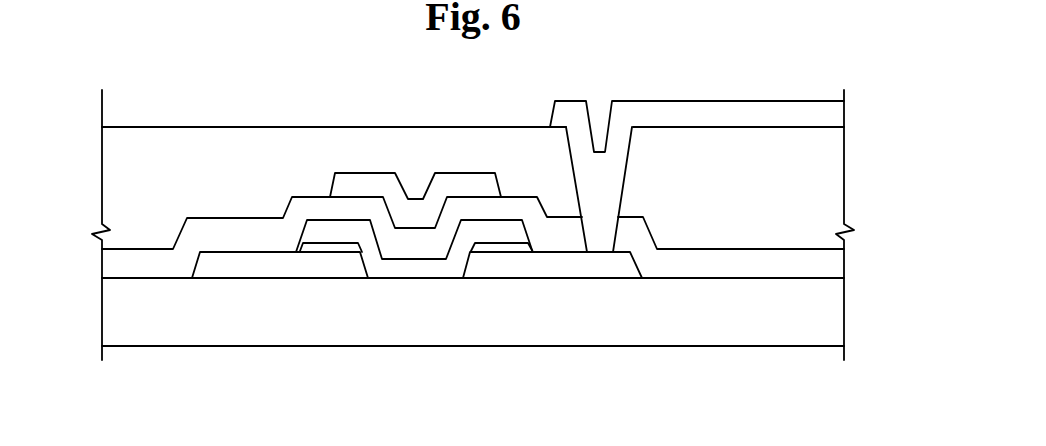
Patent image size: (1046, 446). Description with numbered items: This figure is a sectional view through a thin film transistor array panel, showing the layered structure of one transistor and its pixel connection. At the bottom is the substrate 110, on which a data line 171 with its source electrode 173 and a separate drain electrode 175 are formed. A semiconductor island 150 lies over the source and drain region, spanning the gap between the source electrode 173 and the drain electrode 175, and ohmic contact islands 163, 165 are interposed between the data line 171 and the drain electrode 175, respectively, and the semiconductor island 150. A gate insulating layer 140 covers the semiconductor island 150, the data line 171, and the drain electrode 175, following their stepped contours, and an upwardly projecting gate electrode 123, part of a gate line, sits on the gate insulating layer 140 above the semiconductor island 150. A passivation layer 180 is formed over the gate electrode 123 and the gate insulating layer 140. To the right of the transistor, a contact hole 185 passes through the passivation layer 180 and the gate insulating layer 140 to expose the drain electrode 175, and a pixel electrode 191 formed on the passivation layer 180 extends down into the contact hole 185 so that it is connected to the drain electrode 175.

The substrate 110 is at (648, 340).
The gate electrode 123 is at (425, 215).
The gate insulating layer 140 is at (157, 268).
The semiconductor island 150 is at (393, 268).
The ohmic contact island 163 is at (312, 248).
The ohmic contact island 165 is at (518, 248).
The data line 171 is at (223, 268).
The source electrode 173 is at (335, 267).
The drain electrode 175 is at (557, 268).
The passivation layer 180 is at (300, 127).
The contact hole 185 is at (582, 145).
The pixel electrode 191 is at (744, 101).